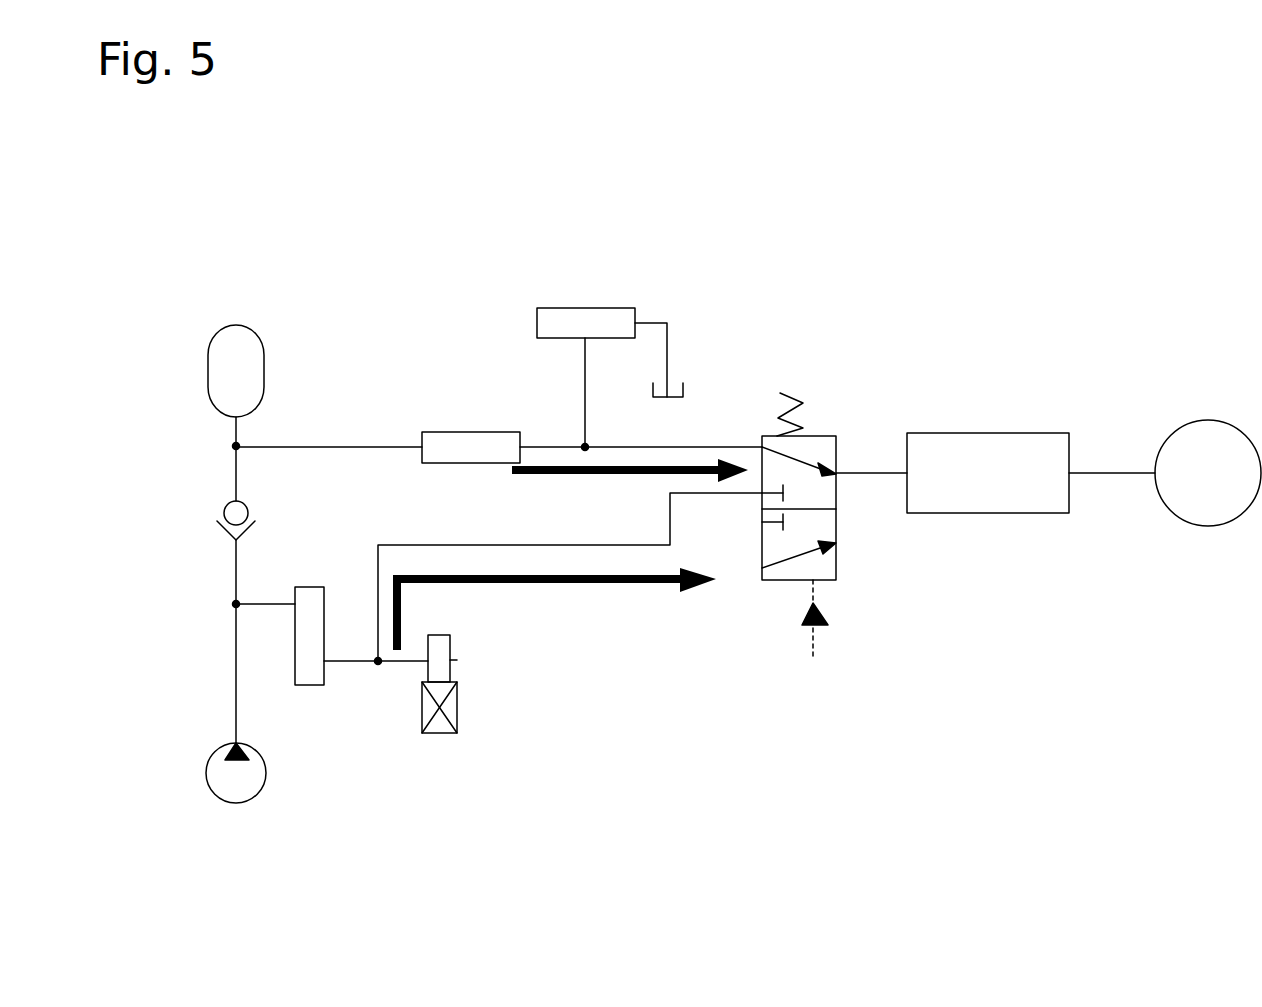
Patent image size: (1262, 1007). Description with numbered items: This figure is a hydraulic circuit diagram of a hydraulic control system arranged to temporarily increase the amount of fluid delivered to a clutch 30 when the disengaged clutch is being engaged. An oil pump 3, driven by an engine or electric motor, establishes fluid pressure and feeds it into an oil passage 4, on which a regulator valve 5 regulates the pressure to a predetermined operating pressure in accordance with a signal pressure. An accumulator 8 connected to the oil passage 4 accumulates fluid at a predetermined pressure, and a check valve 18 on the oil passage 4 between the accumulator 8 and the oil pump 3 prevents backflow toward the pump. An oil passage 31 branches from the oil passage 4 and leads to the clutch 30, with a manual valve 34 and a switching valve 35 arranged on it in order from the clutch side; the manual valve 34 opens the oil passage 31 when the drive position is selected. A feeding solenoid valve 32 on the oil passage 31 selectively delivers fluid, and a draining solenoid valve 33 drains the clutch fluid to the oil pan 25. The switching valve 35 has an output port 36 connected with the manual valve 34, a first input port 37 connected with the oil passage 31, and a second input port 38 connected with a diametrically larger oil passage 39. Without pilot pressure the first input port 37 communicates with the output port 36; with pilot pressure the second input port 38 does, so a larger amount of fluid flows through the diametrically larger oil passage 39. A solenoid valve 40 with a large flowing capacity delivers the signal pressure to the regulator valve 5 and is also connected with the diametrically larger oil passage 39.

The oil pump 3 is at (207, 779).
The oil passage 4 is at (236, 477).
The regulator valve 5 is at (305, 686).
The accumulator 8 is at (208, 376).
The check valve 18 is at (224, 533).
The oil pan 25 is at (685, 389).
The clutch 30 is at (1210, 527).
The oil passage 31 is at (360, 446).
The feeding solenoid valve 32 is at (462, 432).
The draining solenoid valve 33 is at (585, 308).
The manual valve 34 is at (993, 433).
The switching valve 35 is at (822, 425).
The output port 36 is at (832, 474).
The first input port 37 is at (762, 447).
The second input port 38 is at (762, 496).
The diametrically larger oil passage 39 is at (450, 545).
The solenoid valve 40 is at (457, 660).